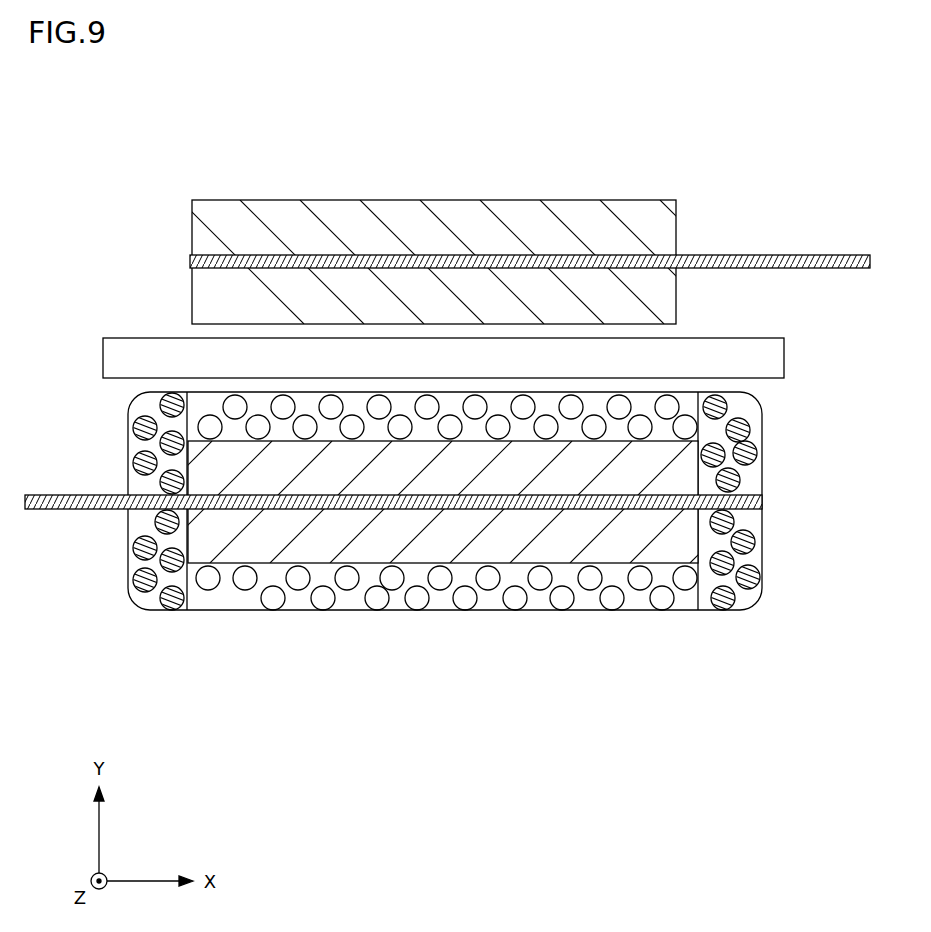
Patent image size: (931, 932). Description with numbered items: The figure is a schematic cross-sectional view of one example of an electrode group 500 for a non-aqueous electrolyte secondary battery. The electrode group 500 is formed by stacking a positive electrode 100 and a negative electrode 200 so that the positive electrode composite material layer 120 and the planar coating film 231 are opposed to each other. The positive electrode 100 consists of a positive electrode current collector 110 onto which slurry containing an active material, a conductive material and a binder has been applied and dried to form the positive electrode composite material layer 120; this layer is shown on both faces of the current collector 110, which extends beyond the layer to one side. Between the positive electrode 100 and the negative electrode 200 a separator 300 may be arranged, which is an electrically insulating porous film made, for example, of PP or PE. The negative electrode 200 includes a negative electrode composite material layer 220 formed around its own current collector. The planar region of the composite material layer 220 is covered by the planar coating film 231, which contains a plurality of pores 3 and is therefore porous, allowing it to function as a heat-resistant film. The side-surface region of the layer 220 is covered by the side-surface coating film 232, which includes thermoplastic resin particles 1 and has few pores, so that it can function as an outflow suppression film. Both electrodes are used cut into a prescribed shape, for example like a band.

The electrode group 500 is at (138, 128).
The positive electrode 100 is at (150, 183).
The positive electrode current collector 110 is at (724, 255).
The positive electrode composite material layer 120 is at (451, 200).
The separator 300 is at (784, 365).
The negative electrode 200 is at (797, 392).
The negative electrode composite material layer 220 is at (367, 555).
The planar coating film 231 is at (448, 612).
The side-surface coating film 232 is at (142, 610).
The thermoplastic resin particles 1 is at (172, 600).
The pores 3 is at (518, 598).